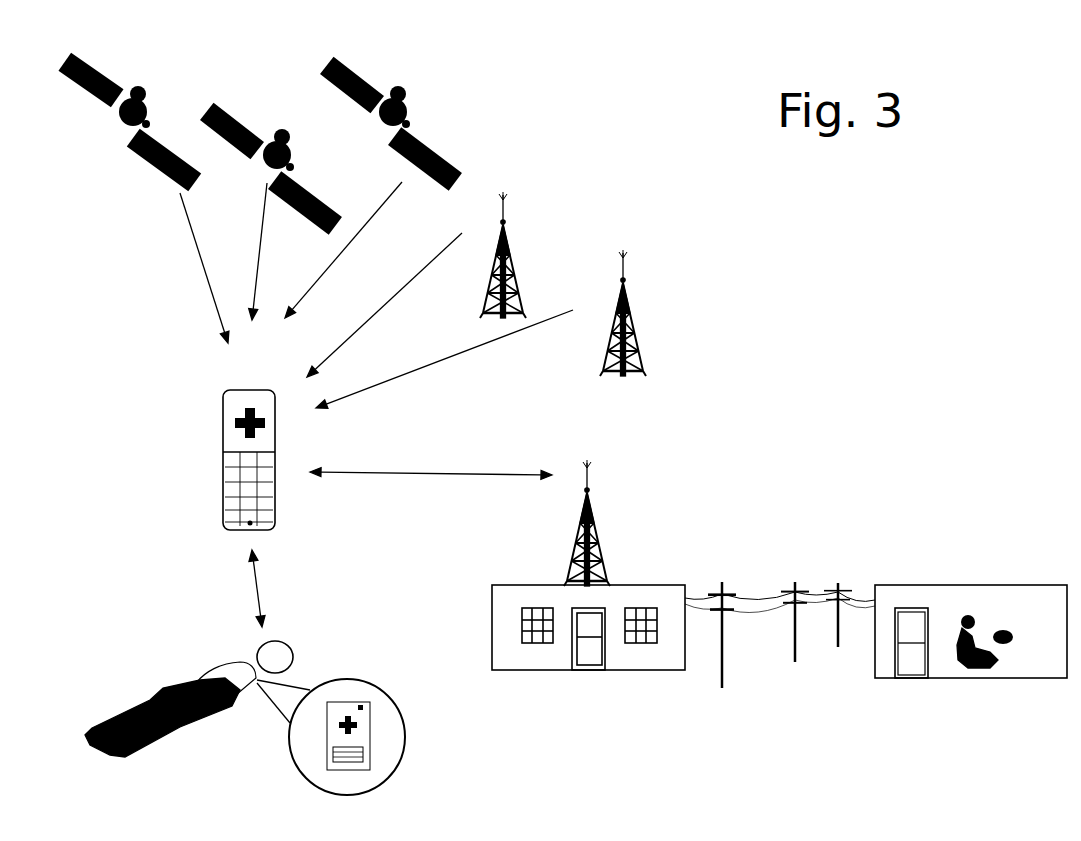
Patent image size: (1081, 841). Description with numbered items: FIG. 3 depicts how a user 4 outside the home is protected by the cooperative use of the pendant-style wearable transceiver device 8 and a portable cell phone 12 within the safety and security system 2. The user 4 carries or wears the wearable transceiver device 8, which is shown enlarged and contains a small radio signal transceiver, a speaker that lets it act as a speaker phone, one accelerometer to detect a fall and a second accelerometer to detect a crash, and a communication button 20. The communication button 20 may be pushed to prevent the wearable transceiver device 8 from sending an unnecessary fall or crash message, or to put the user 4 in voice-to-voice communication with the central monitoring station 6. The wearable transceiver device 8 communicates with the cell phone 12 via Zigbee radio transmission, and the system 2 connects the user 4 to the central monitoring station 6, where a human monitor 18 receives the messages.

The safety and security system 2 is at (739, 431).
The user 4 is at (183, 687).
The central monitoring station 6 is at (903, 584).
The wearable transceiver device 8 is at (367, 713).
The portable cell phone 12 is at (223, 450).
The human monitor 18 is at (971, 616).
The communication button 20 is at (360, 730).